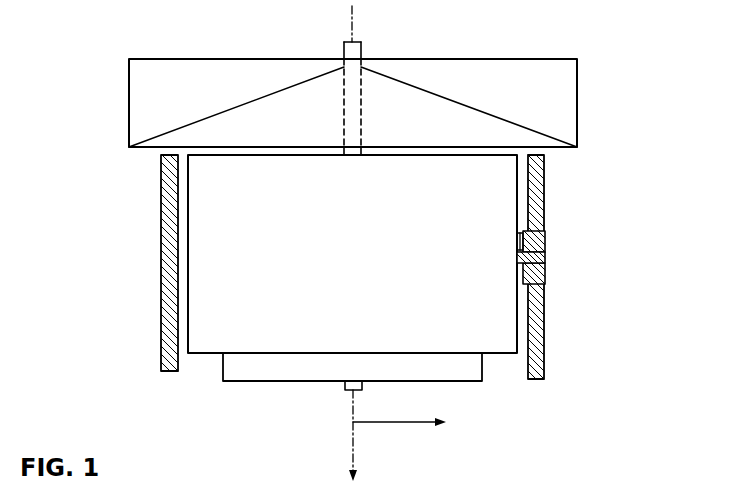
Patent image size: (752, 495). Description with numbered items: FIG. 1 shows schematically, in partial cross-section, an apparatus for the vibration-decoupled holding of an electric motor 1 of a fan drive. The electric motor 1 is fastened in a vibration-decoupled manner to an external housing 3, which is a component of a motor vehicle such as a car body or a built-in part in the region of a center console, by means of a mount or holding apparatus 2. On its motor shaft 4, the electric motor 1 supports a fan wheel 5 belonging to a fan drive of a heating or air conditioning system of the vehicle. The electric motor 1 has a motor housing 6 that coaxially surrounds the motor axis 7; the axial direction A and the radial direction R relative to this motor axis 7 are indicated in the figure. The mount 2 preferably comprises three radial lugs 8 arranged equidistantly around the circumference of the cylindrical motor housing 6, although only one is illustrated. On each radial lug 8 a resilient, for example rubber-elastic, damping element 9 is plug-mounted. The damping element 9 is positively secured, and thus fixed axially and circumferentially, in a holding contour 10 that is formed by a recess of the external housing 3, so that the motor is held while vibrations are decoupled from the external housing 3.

The electric motor 1 is at (288, 272).
The holding apparatus 2 is at (602, 212).
The external housing 3 is at (160, 332).
The motor shaft 4 is at (356, 105).
The fan wheel 5 is at (560, 83).
The motor housing 6 is at (213, 304).
The motor axis 7 is at (351, 12).
The radial lug 8 is at (520, 262).
The damping element 9 is at (538, 240).
The holding contour 10 is at (540, 287).
The axial direction A is at (352, 443).
The radial direction R is at (393, 423).